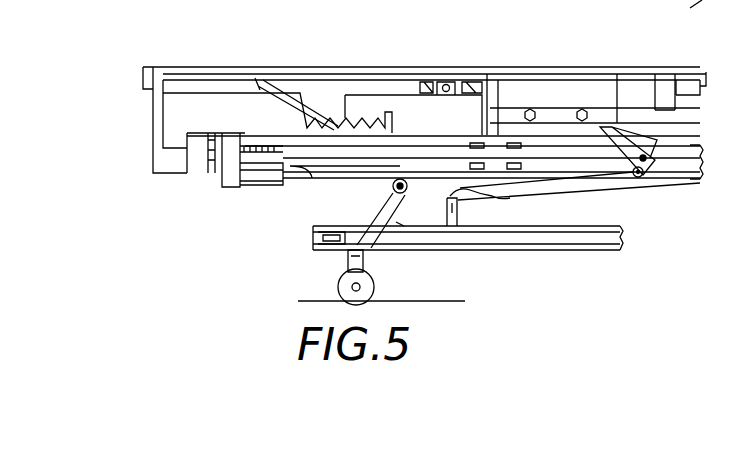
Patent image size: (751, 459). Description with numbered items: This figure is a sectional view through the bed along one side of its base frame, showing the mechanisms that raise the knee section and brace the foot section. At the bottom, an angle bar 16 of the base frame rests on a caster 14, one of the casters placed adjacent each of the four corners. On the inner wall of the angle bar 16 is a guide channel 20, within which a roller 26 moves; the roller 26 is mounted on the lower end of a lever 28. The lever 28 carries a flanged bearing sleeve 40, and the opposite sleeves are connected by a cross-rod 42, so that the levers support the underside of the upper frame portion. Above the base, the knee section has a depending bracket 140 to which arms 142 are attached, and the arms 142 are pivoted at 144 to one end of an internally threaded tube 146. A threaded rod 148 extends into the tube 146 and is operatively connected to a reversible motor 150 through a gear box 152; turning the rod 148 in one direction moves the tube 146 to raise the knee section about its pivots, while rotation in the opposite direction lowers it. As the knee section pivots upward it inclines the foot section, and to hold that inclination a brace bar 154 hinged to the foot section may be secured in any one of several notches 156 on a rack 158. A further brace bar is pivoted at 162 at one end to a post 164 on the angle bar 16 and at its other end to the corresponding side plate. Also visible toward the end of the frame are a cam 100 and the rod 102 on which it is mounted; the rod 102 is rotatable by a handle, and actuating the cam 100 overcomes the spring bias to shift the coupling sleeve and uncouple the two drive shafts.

The caster 14 is at (378, 285).
The angle bar 16 is at (542, 250).
The guide channel 20 is at (334, 230).
The roller 26 is at (378, 252).
The lever 28 is at (382, 210).
The flanged bearing sleeve 40 is at (410, 187).
The cross-rod 42 is at (404, 184).
The cam 100 is at (702, 165).
The rod 102 is at (640, 183).
The depending bracket 140 is at (664, 90).
The arm 142 is at (615, 90).
The pivot 144 is at (648, 156).
The internally threaded tube 146 is at (320, 182).
The threaded rod 148 is at (286, 121).
The reversible motor 150 is at (272, 188).
The gear box 152 is at (230, 140).
The brace bar 154 is at (283, 87).
The notch 156 is at (356, 124).
The rack 158 is at (398, 118).
The pivot 162 is at (483, 198).
The post 164 is at (447, 242).